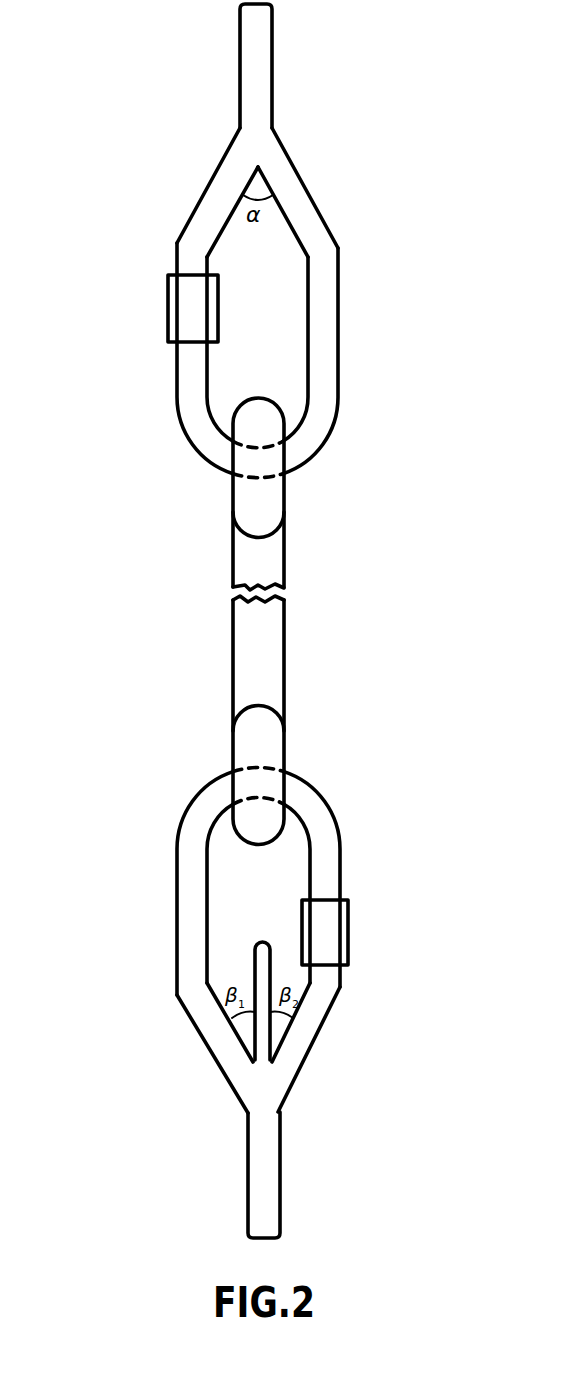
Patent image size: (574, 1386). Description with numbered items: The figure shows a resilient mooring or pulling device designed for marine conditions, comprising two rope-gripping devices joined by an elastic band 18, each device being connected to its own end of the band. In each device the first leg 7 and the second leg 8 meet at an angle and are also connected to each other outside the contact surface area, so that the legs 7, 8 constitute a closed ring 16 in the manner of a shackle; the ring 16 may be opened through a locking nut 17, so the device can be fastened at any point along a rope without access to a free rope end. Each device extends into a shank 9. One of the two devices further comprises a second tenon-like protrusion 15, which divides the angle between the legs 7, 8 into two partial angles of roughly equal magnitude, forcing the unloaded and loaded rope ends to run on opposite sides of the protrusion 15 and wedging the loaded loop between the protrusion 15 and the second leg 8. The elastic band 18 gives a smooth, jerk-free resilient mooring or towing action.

The first leg 7 is at (303, 198).
The second leg 8 is at (233, 170).
The shank 9 is at (257, 53).
The second tenon-like protrusion 15 is at (258, 957).
The closed ring 16 is at (288, 335).
The locking nut 17 is at (182, 310).
The elastic band 18 is at (262, 642).